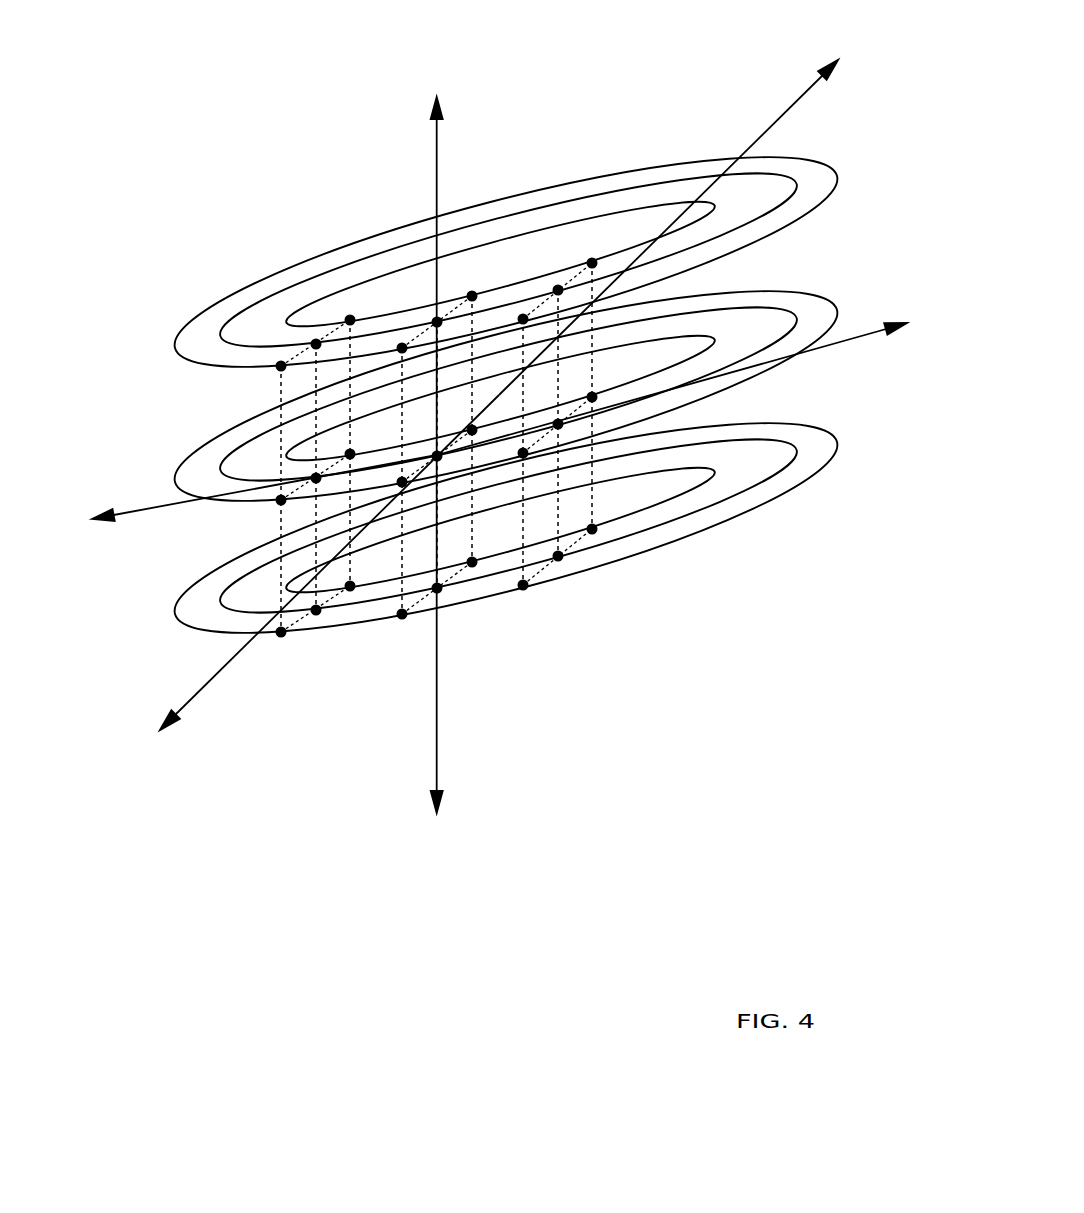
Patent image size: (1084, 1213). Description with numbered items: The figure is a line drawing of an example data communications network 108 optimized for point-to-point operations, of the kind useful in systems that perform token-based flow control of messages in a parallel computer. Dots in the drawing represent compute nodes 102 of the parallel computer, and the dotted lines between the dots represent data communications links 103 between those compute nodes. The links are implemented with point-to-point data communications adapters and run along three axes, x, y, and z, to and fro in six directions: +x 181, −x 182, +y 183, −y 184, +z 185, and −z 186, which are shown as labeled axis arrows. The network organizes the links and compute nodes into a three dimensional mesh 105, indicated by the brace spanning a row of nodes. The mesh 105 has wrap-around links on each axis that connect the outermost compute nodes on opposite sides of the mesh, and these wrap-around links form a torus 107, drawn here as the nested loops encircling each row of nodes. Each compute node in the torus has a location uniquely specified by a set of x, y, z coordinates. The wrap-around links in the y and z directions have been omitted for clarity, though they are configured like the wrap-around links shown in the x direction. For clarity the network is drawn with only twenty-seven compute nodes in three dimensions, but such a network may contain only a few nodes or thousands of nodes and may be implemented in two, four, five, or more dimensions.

The compute nodes 102 is at (592, 528).
The data communications links 103 is at (280, 392).
The three dimensional mesh 105 is at (350, 320).
The torus 107 is at (256, 262).
The data communications network 108 is at (393, 1053).
The +x direction 181 is at (942, 353).
The −x direction 182 is at (91, 558).
The +y direction 183 is at (883, 87).
The −y direction 184 is at (158, 784).
The +z direction 185 is at (455, 88).
The −z direction 186 is at (456, 878).